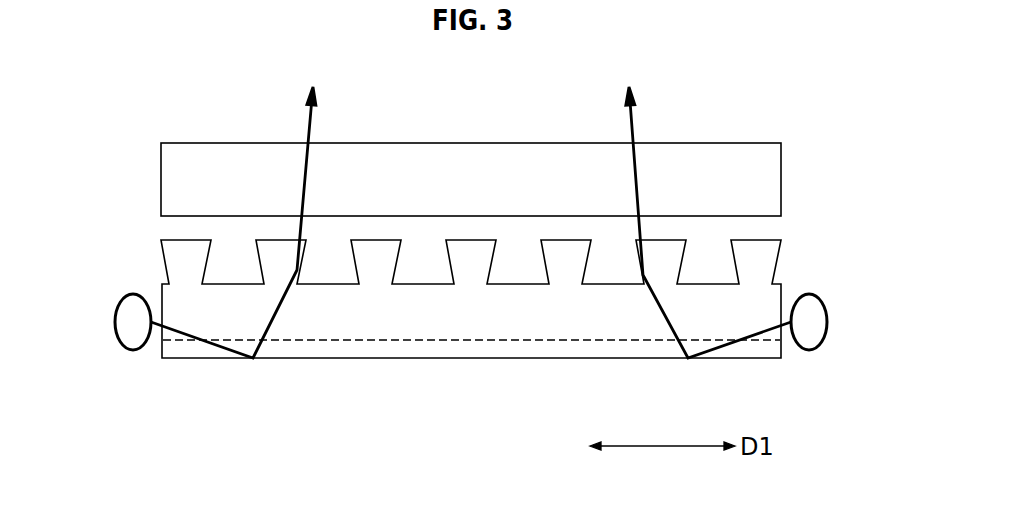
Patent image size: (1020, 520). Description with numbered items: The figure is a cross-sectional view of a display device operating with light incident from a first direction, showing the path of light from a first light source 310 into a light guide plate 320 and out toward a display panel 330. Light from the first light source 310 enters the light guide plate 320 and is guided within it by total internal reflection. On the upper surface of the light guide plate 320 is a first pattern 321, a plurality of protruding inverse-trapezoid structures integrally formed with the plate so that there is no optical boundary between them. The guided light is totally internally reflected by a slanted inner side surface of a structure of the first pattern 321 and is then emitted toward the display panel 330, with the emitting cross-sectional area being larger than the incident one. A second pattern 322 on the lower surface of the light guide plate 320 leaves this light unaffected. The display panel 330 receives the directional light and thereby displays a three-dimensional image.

The first light source 310 is at (115, 321).
The light guide plate 320 is at (160, 290).
The first pattern 321 is at (796, 227).
The second pattern 322 is at (382, 348).
The display panel 330 is at (781, 178).